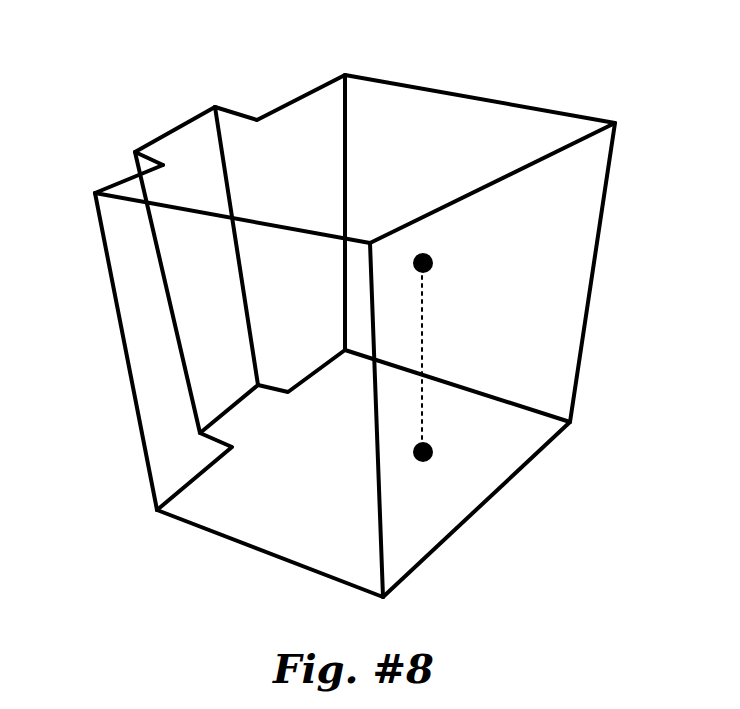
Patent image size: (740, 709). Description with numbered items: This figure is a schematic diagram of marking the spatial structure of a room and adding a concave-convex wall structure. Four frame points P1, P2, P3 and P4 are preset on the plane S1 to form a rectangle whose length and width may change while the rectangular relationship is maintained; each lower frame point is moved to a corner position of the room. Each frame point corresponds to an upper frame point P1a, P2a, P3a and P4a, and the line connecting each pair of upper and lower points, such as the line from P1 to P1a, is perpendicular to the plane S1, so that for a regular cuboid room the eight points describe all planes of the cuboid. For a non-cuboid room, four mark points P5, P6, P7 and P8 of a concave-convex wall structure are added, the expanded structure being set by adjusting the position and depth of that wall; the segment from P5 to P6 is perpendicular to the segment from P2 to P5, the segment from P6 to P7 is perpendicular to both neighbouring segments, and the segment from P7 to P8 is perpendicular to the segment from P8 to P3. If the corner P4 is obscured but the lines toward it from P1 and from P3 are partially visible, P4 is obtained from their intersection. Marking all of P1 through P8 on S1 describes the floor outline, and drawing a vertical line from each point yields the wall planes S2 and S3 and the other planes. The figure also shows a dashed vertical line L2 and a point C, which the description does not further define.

The frame point P1 is at (277, 576).
The frame point P2 is at (126, 368).
The frame point P3 is at (326, 212).
The frame point P4 is at (478, 396).
The mark point P5 is at (212, 447).
The mark point P6 is at (167, 307).
The mark point P7 is at (196, 246).
The mark point P8 is at (301, 387).
The upper frame point P1a is at (374, 388).
The upper frame point P2a is at (98, 180).
The upper frame point P3a is at (302, 74).
The upper frame point P4a is at (615, 267).
The plane S1 is at (462, 509).
The plane S2 is at (232, 199).
The plane S3 is at (480, 159).
The line L2 is at (450, 369).
The center point C is at (440, 268).